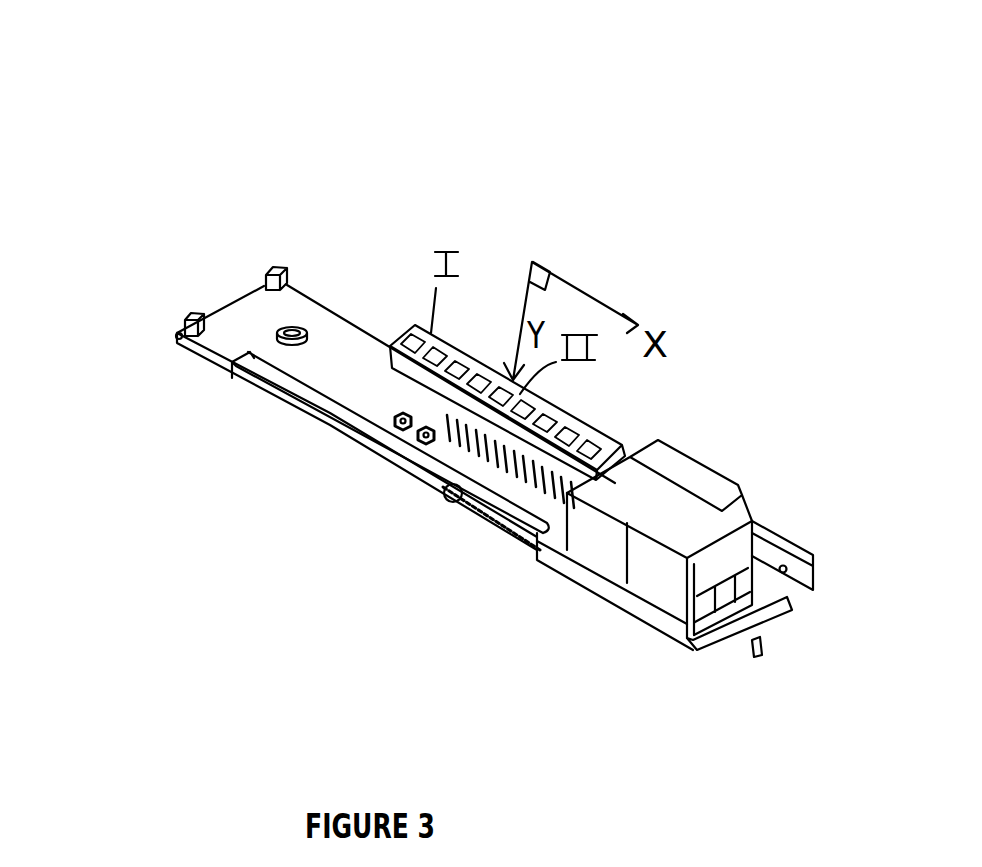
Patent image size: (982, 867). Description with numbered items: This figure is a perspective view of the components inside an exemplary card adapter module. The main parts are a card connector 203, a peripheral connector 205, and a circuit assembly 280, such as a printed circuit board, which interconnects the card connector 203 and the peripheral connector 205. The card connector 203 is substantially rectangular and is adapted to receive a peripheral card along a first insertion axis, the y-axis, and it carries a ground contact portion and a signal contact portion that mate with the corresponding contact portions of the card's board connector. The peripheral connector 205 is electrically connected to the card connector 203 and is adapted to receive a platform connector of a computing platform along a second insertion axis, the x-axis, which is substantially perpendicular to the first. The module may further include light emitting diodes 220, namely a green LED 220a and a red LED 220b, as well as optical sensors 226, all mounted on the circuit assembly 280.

The card connector 203 is at (452, 331).
The peripheral connector 205 is at (743, 507).
The light emitting diodes 220 is at (217, 214).
The green LED 220a is at (176, 338).
The red LED 220b is at (286, 262).
The optical sensors 226 is at (425, 445).
The circuit assembly 280 is at (330, 367).